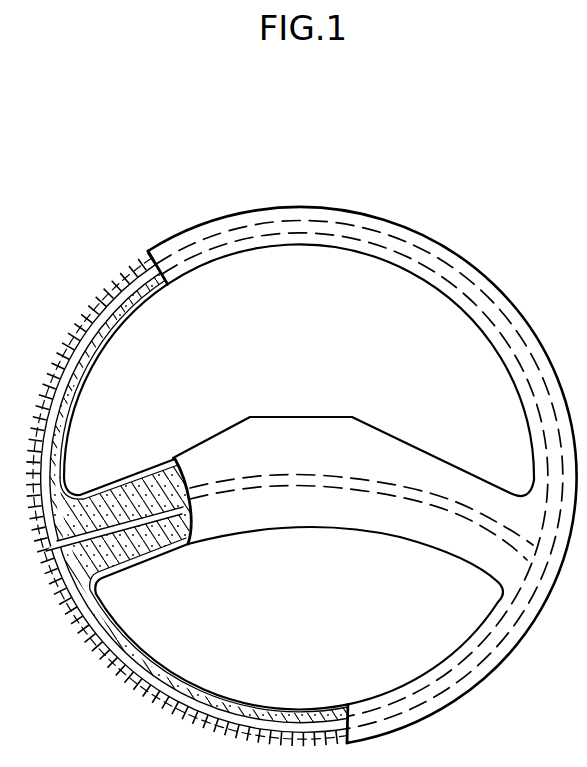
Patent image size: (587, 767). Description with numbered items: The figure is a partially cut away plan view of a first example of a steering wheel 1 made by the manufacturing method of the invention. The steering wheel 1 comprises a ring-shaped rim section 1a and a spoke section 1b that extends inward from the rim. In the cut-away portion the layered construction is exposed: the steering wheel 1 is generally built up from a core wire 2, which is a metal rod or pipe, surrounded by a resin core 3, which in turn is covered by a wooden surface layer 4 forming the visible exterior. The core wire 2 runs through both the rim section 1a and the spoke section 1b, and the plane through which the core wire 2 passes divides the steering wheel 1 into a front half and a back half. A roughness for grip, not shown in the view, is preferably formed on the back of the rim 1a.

The steering wheel 1 is at (305, 468).
The rim section 1a is at (483, 332).
The spoke section 1b is at (407, 442).
The core wire 2 is at (103, 292).
The resin core 3 is at (68, 513).
The wooden surface layer 4 is at (150, 560).